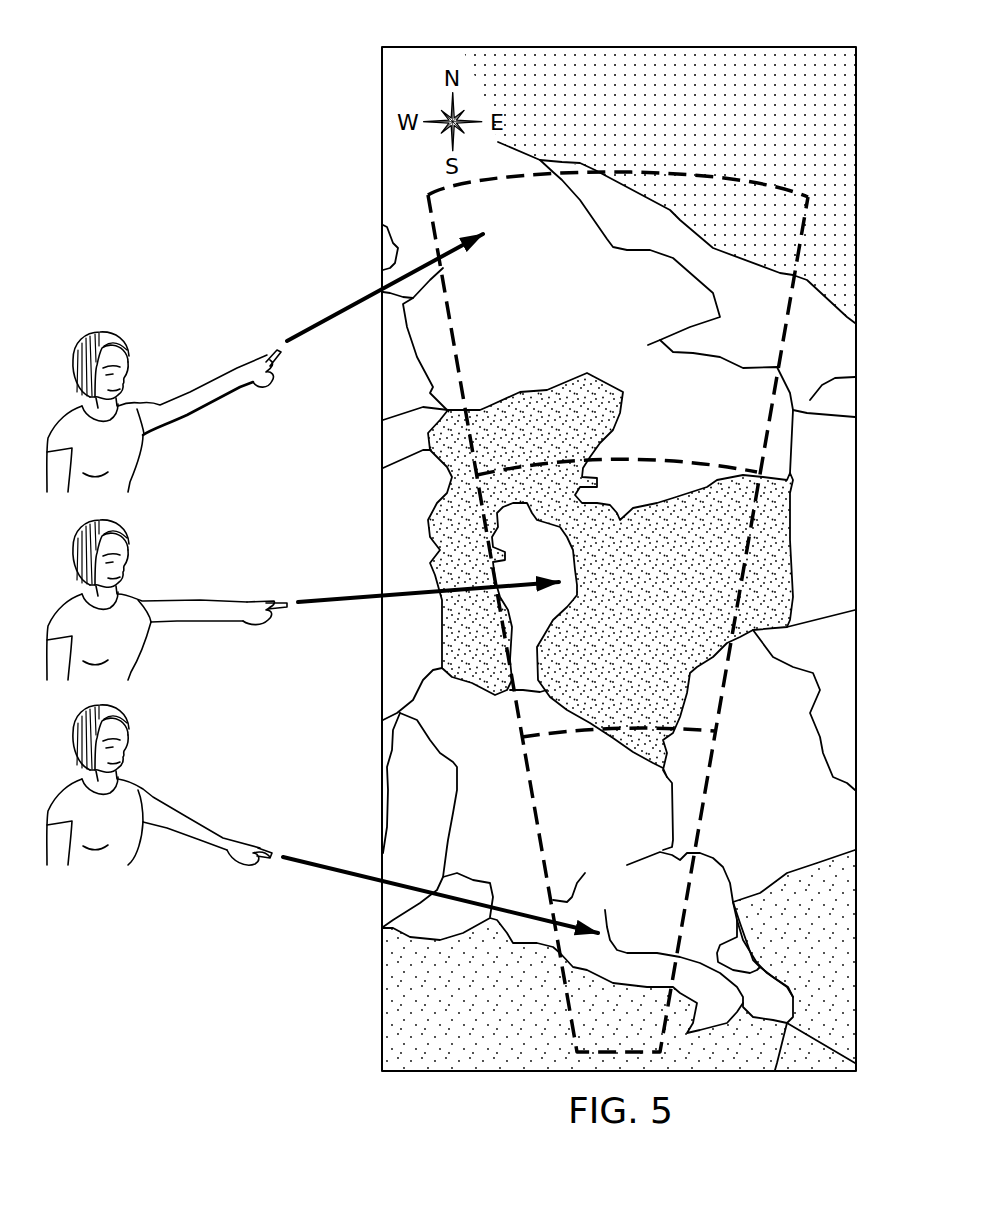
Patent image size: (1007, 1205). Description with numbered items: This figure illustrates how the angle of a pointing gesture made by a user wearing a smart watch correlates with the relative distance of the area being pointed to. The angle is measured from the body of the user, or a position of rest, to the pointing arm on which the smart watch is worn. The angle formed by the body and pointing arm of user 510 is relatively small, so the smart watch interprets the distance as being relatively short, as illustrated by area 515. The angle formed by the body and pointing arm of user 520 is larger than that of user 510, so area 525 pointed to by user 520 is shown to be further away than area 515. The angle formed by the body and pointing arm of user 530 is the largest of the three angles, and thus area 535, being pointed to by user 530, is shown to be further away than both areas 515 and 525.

The user 510 is at (171, 859).
The area 515 is at (640, 900).
The user 520 is at (170, 654).
The area 525 is at (639, 601).
The user 530 is at (171, 457).
The area 535 is at (639, 333).